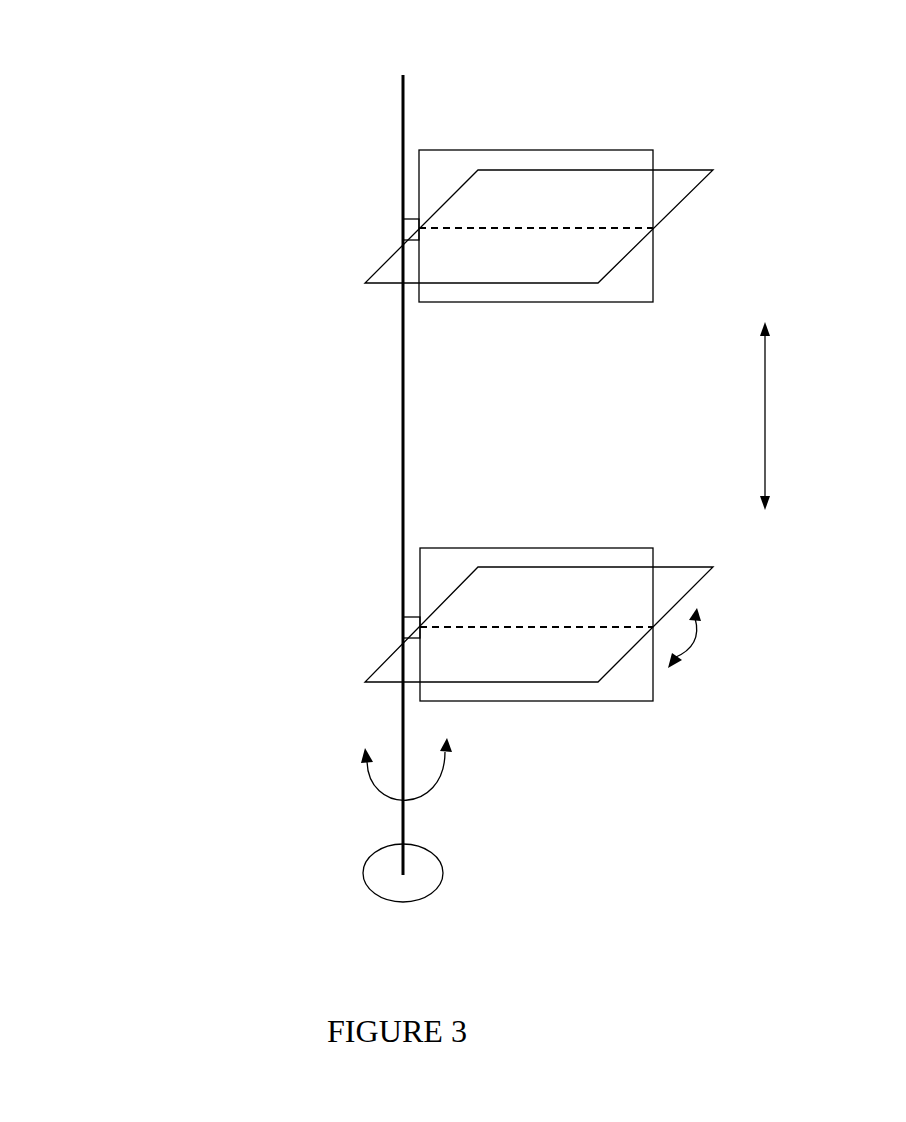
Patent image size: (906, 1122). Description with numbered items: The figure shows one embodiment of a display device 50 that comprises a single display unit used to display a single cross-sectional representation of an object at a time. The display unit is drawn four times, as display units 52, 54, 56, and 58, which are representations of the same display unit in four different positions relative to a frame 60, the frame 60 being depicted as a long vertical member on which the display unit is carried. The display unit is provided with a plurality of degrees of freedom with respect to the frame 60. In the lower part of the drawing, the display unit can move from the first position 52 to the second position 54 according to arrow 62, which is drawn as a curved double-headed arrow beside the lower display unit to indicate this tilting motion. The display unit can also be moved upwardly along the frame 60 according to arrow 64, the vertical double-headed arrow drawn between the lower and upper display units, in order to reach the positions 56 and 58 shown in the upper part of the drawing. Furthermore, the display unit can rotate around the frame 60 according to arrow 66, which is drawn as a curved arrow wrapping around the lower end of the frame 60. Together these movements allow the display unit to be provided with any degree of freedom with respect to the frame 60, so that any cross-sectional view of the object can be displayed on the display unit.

The display device 50 is at (165, 88).
The first position of display unit 52 is at (635, 681).
The second position of display unit 54 is at (672, 586).
The third position of display unit 56 is at (635, 283).
The fourth position of display unit 58 is at (677, 187).
The frame 60 is at (407, 92).
The arrow 62 is at (693, 645).
The arrow 64 is at (765, 415).
The arrow 66 is at (377, 790).